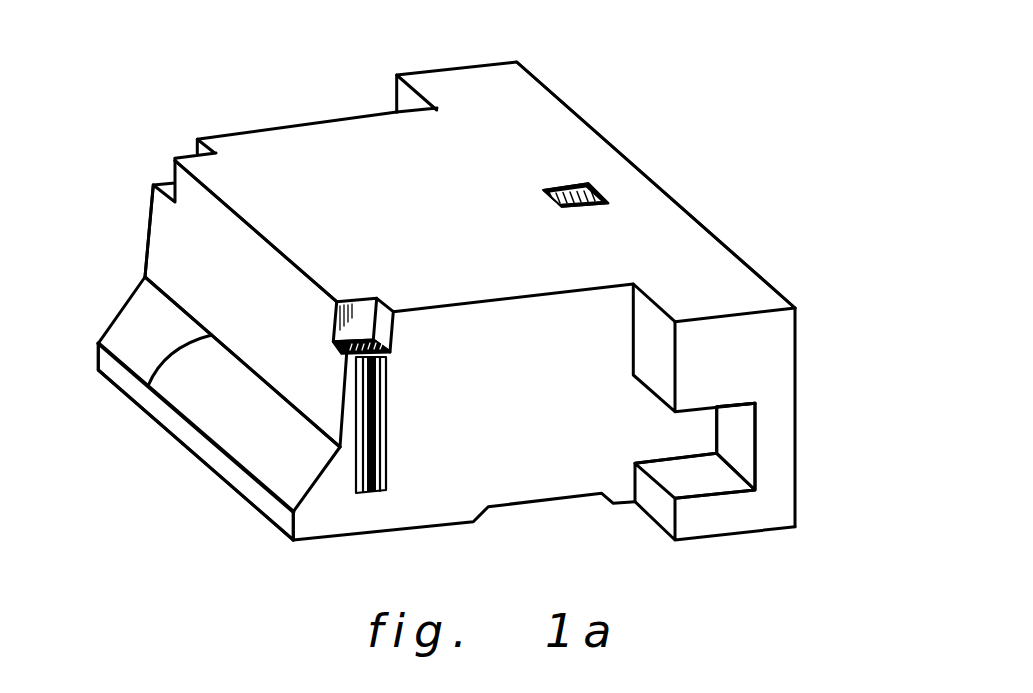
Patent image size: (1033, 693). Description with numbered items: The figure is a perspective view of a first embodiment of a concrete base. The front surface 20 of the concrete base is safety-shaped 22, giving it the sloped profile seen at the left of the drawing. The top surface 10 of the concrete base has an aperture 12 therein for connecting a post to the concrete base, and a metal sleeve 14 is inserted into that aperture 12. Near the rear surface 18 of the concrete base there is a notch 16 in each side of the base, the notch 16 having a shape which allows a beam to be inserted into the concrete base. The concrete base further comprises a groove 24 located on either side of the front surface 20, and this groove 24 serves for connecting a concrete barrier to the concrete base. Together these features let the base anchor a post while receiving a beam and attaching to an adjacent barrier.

The top surface 10 is at (502, 153).
The aperture 12 is at (582, 183).
The metal sleeve 14 is at (600, 197).
The rear surface 18 is at (718, 240).
The notch 16 is at (727, 445).
The front surface 20 is at (168, 242).
The safety-shaped 22 is at (146, 385).
The groove 24 is at (360, 333).